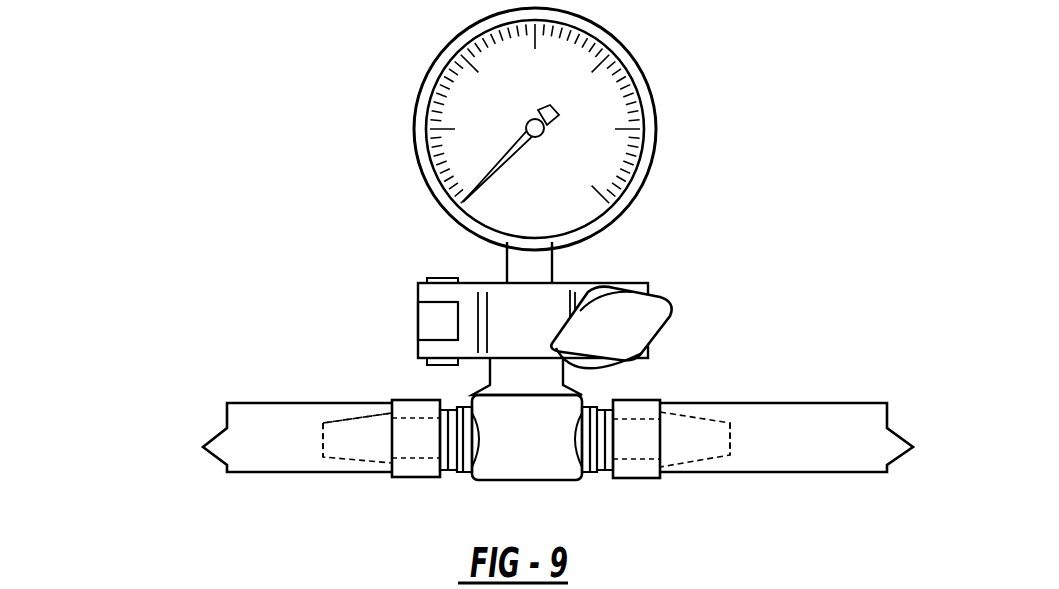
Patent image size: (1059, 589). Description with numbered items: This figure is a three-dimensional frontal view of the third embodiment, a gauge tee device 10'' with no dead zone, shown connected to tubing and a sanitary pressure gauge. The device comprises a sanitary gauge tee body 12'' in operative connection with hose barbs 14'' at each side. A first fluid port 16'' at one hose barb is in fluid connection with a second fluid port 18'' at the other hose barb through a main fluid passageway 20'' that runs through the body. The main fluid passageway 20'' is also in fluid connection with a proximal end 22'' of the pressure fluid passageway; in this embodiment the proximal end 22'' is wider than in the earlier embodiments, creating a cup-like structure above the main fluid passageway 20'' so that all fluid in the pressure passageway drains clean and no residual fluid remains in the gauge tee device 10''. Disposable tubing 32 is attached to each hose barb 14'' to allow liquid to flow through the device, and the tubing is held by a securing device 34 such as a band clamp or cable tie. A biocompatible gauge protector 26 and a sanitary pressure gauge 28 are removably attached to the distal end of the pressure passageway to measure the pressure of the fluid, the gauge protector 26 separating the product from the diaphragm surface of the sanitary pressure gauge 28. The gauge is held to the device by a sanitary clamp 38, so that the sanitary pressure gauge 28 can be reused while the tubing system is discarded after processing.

The gauge tee device 10'' is at (584, 520).
The sanitary gauge tee body 12'' is at (526, 463).
The hose barbs 14'' is at (539, 480).
The first fluid port 16'' is at (300, 478).
The second fluid port 18'' is at (772, 475).
The main fluid passageway 20'' is at (346, 381).
The proximal end 22'' is at (623, 372).
The biocompatible gauge protector 26 is at (640, 343).
The sanitary pressure gauge 28 is at (630, 172).
The disposable tubing 32 is at (248, 450).
The securing device 34 is at (413, 478).
The sanitary clamp 38 is at (615, 285).